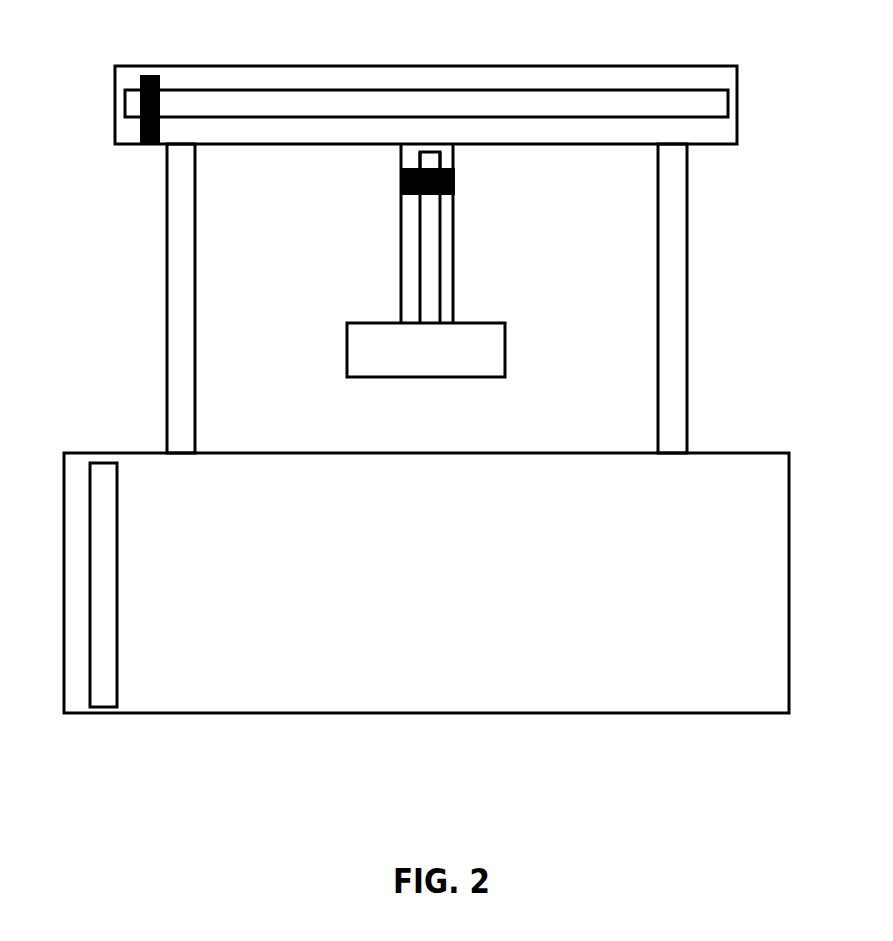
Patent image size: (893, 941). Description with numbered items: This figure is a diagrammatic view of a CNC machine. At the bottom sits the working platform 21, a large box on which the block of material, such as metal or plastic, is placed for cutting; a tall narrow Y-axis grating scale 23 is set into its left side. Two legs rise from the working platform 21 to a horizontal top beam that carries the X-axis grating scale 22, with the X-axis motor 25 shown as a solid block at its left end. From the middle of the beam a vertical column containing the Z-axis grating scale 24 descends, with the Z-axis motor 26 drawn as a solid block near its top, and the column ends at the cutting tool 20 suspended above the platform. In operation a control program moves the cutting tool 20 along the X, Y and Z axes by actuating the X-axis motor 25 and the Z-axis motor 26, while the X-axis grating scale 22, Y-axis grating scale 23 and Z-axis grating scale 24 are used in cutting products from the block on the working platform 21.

The cutting tool 20 is at (505, 347).
The working platform 21 is at (790, 555).
The X-axis grating scale 22 is at (220, 88).
The Y-axis grating scale 23 is at (90, 530).
The Z-axis grating scale 24 is at (438, 297).
The X-axis motor 25 is at (160, 75).
The Z-axis motor 26 is at (400, 182).